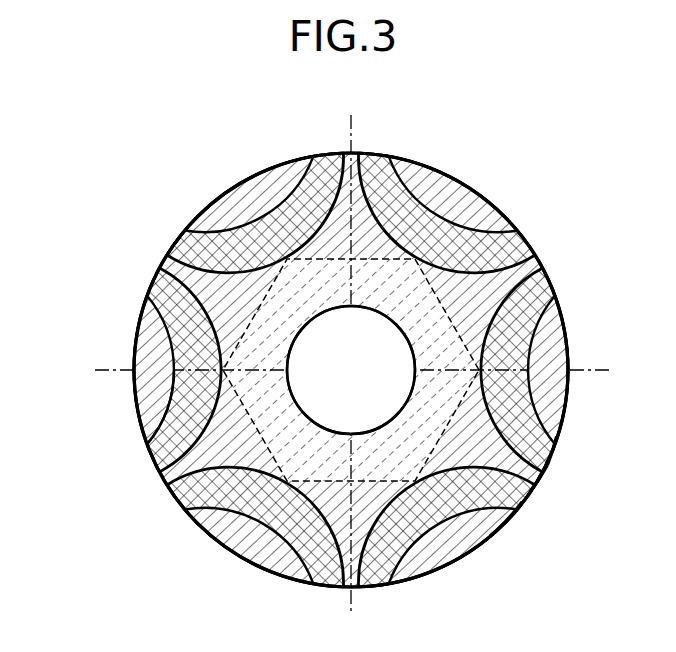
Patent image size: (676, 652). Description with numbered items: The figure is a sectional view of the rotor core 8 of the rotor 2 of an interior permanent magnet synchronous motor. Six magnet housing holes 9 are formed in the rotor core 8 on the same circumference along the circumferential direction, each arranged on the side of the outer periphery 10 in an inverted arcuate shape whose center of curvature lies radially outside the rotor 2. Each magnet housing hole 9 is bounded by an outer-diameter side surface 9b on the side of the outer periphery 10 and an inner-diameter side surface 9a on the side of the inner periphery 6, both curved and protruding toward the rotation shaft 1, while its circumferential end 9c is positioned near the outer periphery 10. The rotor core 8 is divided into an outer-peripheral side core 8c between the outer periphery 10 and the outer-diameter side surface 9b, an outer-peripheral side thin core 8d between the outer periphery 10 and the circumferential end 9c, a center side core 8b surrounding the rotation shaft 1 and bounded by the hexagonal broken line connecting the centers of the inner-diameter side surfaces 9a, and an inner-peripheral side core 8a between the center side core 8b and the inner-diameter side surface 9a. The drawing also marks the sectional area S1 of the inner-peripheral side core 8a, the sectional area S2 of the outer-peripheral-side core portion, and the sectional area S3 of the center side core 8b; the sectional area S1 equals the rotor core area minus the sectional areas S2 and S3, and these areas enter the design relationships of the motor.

The rotation shaft 1 is at (335, 405).
The rotor 2 is at (497, 176).
The inner periphery 6 is at (307, 322).
The rotor core 8 is at (606, 447).
The inner-peripheral side core 8a is at (538, 479).
The center side core 8b is at (512, 515).
The outer-peripheral side core 8c is at (499, 529).
The outer-peripheral side thin core 8d is at (552, 451).
The magnet housing hole 9 is at (163, 293).
The inner-diameter side surface 9a is at (172, 400).
The outer-diameter side surface 9b is at (156, 330).
The circumferential end 9c is at (148, 442).
The outer periphery 10 is at (433, 168).
The sectional area of the inner-peripheral side core S1 is at (494, 461).
The sectional area of the outer-peripheral-side core portion S2 is at (447, 527).
The sectional area of the center side core S3 is at (462, 465).